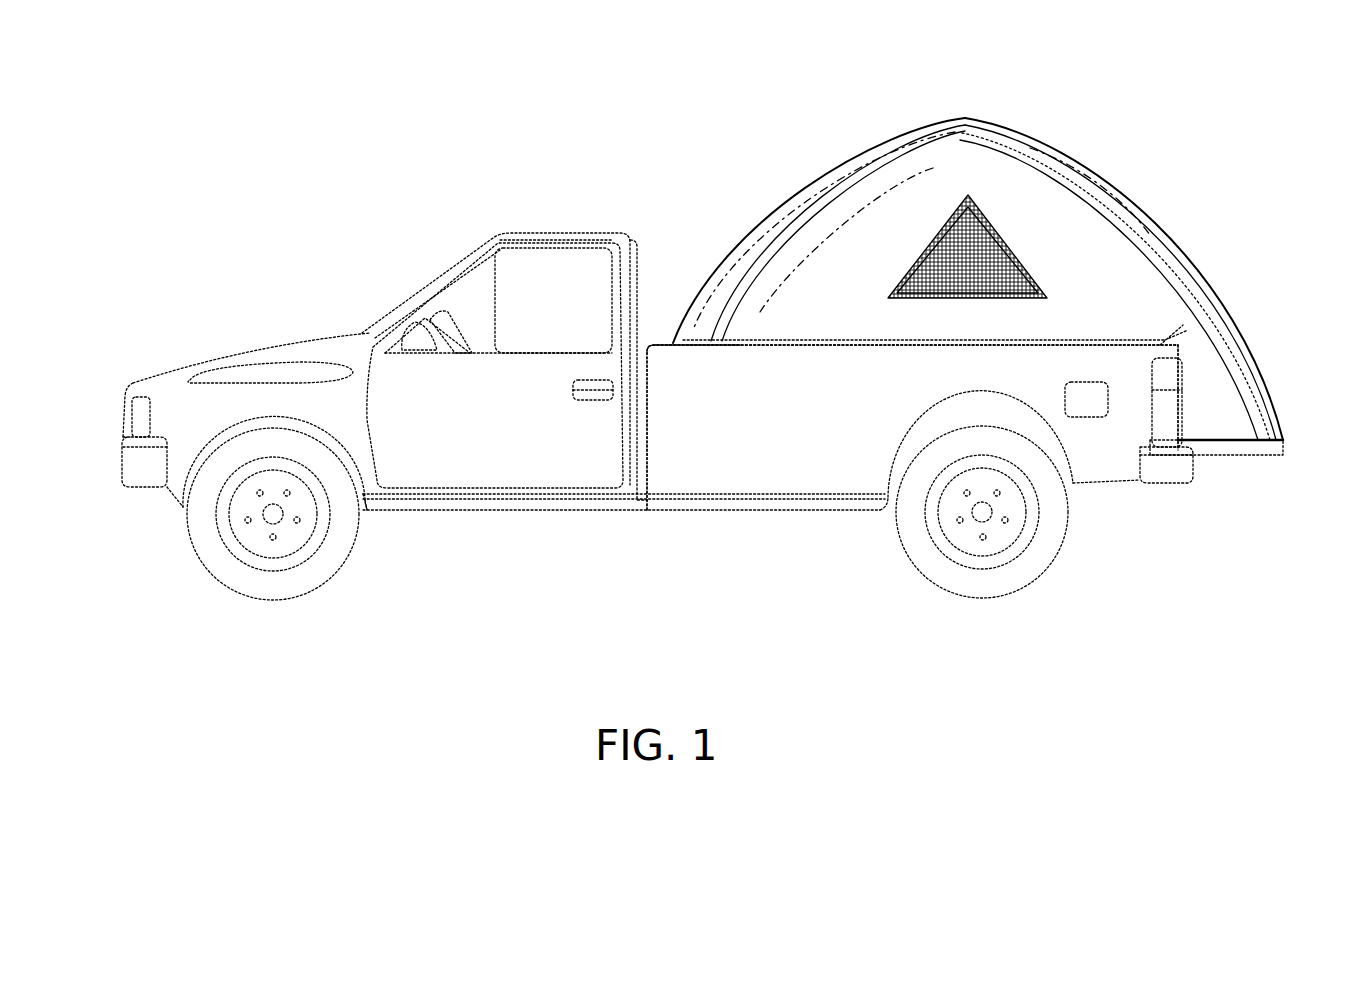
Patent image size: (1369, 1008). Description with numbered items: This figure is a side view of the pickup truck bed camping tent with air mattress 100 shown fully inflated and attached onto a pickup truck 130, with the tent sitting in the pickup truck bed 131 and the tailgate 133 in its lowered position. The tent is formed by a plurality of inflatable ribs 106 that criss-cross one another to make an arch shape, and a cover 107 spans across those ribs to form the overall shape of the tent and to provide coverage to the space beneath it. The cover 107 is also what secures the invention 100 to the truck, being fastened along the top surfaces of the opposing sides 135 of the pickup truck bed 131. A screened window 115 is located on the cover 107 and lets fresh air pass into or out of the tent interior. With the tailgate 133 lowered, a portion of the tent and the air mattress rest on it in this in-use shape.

The pickup truck bed camping tent with air mattress 100 is at (978, 293).
The inflatable ribs 106 is at (1212, 195).
The cover 107 is at (1027, 178).
The screened window 115 is at (920, 254).
The pickup truck 130 is at (558, 243).
The pickup truck bed 131 is at (1178, 612).
The tailgate 133 is at (1237, 447).
The opposing sides 135 is at (737, 385).